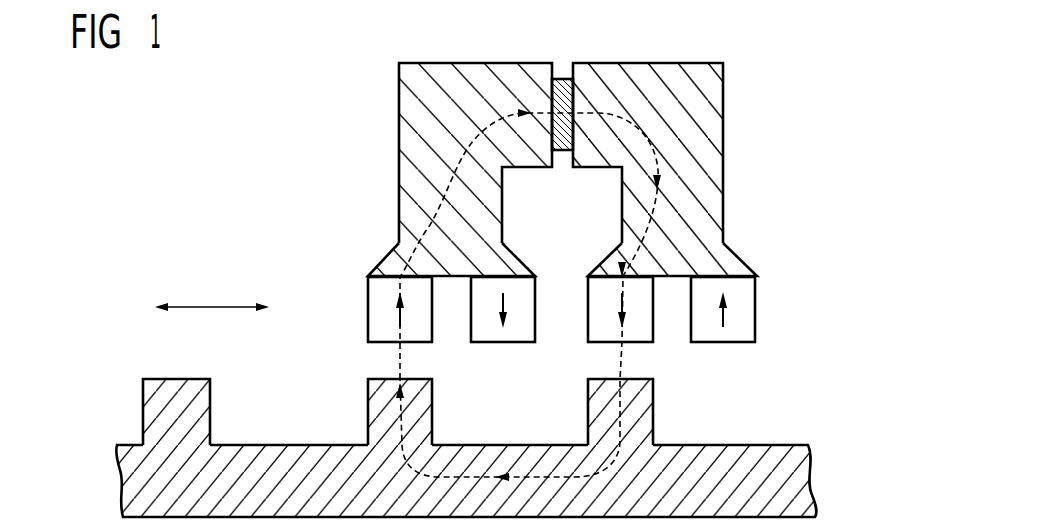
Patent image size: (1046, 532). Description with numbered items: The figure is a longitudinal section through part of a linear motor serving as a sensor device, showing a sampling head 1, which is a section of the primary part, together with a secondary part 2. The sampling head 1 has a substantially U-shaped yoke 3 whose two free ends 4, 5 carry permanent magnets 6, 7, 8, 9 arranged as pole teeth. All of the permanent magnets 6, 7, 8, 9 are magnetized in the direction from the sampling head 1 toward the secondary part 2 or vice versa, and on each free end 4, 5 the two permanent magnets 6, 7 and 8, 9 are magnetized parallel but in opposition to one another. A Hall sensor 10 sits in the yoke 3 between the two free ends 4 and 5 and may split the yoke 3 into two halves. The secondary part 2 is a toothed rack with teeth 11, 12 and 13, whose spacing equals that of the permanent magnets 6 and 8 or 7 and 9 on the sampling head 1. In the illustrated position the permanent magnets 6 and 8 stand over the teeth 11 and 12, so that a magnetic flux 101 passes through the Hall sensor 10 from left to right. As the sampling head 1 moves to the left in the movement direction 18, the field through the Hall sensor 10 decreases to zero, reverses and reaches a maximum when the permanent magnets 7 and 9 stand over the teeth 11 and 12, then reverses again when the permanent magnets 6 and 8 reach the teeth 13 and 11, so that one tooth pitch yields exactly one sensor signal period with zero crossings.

The sampling head 1 is at (546, 242).
The secondary part 2 is at (466, 441).
The yoke 3 is at (724, 103).
The free end 4 is at (668, 276).
The free end 5 is at (438, 256).
The permanent magnet 6 is at (368, 316).
The permanent magnet 7 is at (487, 343).
The permanent magnet 8 is at (588, 335).
The permanent magnet 9 is at (756, 317).
The Hall sensor 10 is at (561, 78).
The magnetic flux 101 is at (636, 122).
The tooth 11 is at (368, 418).
The tooth 12 is at (653, 418).
The tooth 13 is at (210, 418).
The movement direction 18 is at (213, 307).